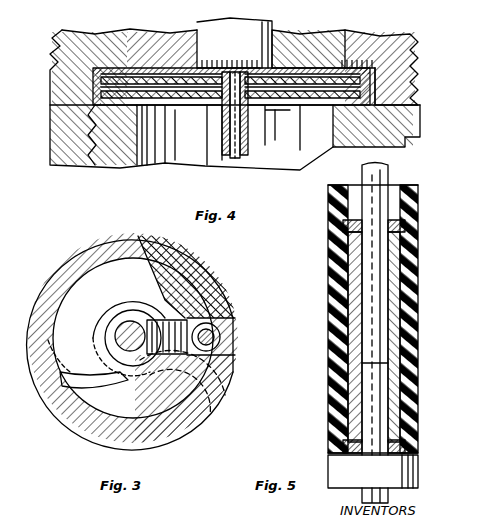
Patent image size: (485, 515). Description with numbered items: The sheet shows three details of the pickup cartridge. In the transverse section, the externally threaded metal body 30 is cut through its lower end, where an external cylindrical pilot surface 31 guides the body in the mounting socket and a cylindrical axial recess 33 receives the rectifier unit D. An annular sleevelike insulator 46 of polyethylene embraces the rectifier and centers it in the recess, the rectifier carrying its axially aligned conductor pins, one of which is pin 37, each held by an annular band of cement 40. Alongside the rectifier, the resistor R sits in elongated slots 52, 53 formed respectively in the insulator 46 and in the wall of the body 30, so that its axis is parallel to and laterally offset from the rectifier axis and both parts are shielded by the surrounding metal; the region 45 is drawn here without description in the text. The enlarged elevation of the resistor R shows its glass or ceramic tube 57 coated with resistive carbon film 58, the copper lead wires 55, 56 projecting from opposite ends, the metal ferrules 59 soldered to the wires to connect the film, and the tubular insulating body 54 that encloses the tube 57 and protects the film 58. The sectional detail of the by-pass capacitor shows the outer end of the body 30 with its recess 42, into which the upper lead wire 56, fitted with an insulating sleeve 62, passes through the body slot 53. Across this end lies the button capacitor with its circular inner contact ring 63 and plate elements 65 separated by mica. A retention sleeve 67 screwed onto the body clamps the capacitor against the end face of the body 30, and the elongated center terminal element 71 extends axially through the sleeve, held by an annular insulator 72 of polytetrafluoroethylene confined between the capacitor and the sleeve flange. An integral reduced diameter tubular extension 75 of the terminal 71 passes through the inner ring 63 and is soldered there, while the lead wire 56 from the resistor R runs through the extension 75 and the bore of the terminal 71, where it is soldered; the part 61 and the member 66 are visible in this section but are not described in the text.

In FIG. 4, the body 30 is at (110, 168).
In FIG. 3, the body 30 is at (75, 425).
In FIG. 3, the pilot surface 31 is at (215, 398).
In FIG. 3, the axial recess 33 is at (195, 412).
In FIG. 3, the conductor pin 37 is at (105, 318).
In FIG. 3, the band of cement 40 is at (115, 342).
In FIG. 4, the recess 42 is at (160, 168).
In FIG. 3, the hatched sector 45 is at (186, 277).
In FIG. 3, the sleevelike insulator 46 is at (62, 380).
In FIG. 3, the slot 52 is at (215, 326).
In FIG. 3, the slot 53 is at (232, 318).
In FIG. 5, the tubular insulating body 54 is at (418, 378).
In FIG. 5, the lead wire 55 is at (385, 410).
In FIG. 4, the lead wire 56 is at (230, 150).
In FIG. 5, the lead wire 56 is at (382, 170).
In FIG. 5, the tube 57 is at (400, 273).
In FIG. 5, the resistive carbon film 58 is at (392, 300).
In FIG. 5, the metal ferrules 59 is at (400, 220).
In FIG. 4, the bracket 61 is at (147, 140).
In FIG. 4, the insulating sleeve 62 is at (248, 145).
In FIG. 4, the inner contact ring 63 is at (262, 108).
In FIG. 4, the plate elements 65 is at (150, 100).
In FIG. 4, the member 66 is at (270, 105).
In FIG. 4, the retention sleeve 67 is at (405, 90).
In FIG. 4, the terminal element 71 is at (262, 40).
In FIG. 4, the annular insulator 72 is at (325, 45).
In FIG. 4, the tubular extension 75 is at (210, 125).
In FIG. 3, the rectifier unit D is at (133, 300).
In FIG. 3, the resistor R is at (222, 344).
In FIG. 5, the resistor R is at (328, 408).